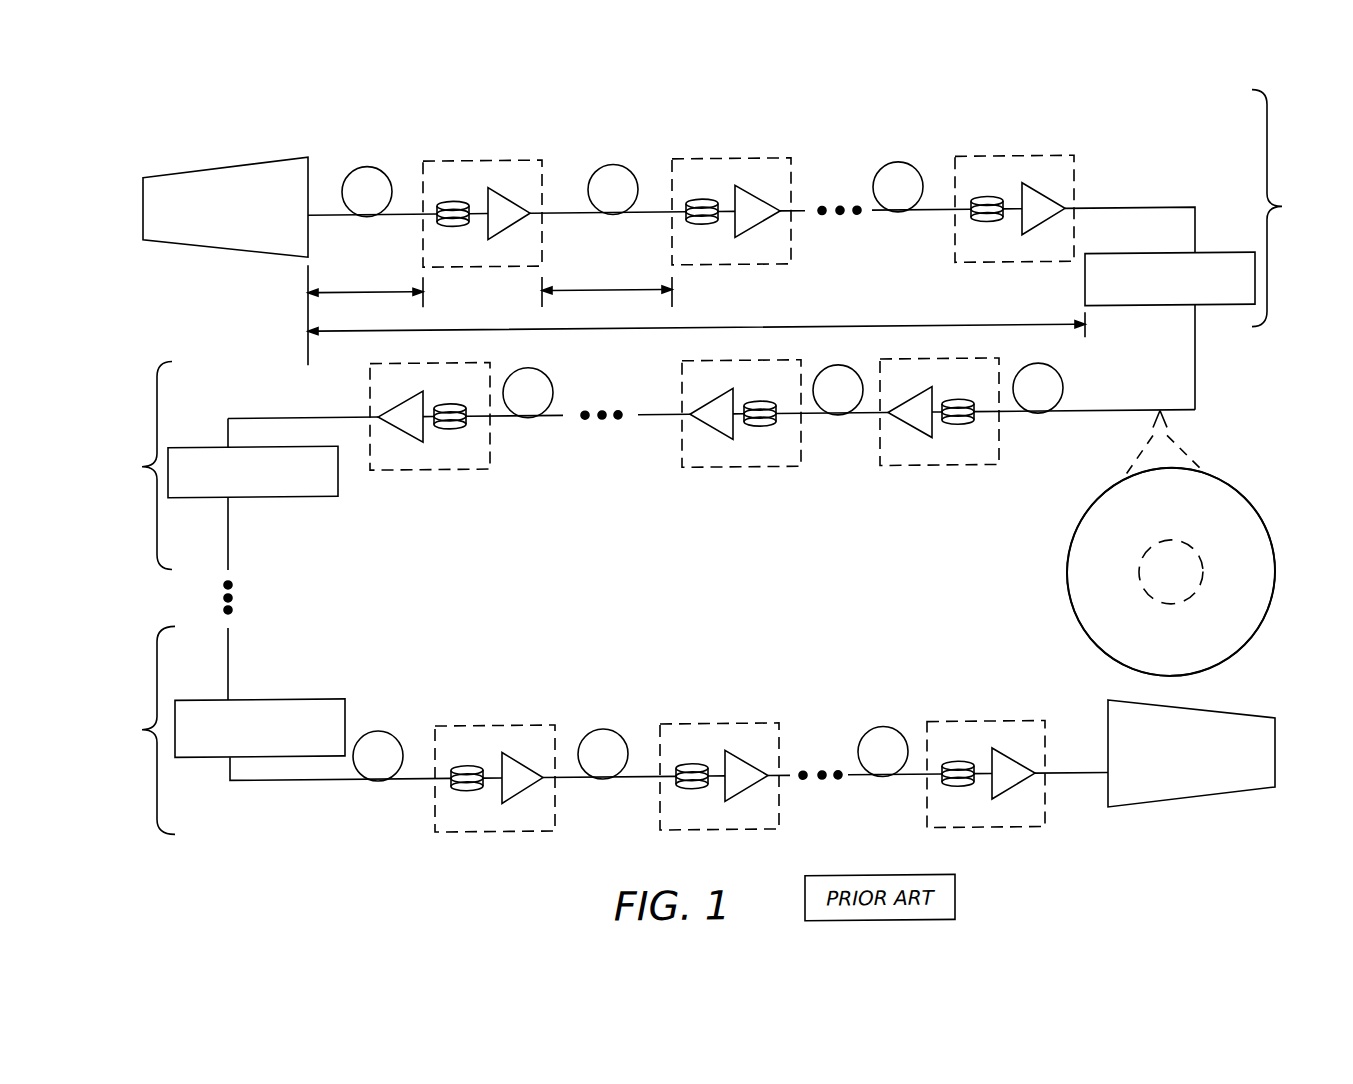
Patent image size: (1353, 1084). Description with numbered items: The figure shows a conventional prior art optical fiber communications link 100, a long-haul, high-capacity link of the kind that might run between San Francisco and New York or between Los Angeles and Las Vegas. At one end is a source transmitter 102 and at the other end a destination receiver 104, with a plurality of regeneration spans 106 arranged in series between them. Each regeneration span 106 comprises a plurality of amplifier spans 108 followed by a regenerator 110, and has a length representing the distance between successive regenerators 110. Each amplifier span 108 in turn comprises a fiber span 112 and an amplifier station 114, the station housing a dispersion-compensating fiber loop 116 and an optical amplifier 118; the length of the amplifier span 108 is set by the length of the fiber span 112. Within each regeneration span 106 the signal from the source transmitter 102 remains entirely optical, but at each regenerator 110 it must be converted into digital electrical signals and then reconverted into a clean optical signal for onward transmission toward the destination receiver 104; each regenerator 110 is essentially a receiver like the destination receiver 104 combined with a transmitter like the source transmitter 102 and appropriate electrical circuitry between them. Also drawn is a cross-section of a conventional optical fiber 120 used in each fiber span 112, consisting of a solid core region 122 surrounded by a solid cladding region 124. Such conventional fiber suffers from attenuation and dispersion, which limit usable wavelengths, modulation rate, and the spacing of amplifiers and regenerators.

The optical fiber communications link 100 is at (206, 101).
The source transmitter 102 is at (225, 254).
The destination receiver 104 is at (1193, 812).
The regeneration span 106 is at (710, 462).
The amplifier span 108 is at (317, 113).
The regenerator 110 is at (1213, 263).
The fiber span 112 is at (366, 171).
The amplifier station 114 is at (462, 166).
The dispersion-compensating fiber loop 116 is at (455, 204).
The optical amplifier 118 is at (489, 194).
The optical fiber 120 is at (1068, 600).
The core region 122 is at (1153, 600).
The cladding region 124 is at (1103, 608).